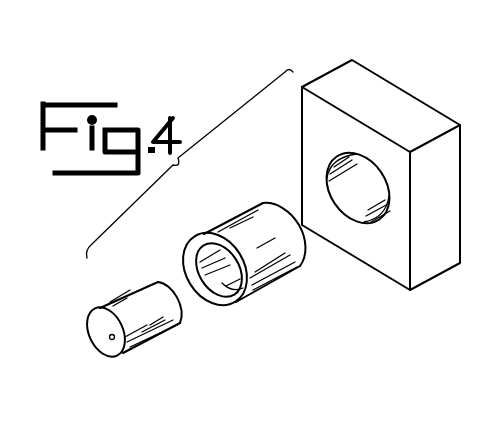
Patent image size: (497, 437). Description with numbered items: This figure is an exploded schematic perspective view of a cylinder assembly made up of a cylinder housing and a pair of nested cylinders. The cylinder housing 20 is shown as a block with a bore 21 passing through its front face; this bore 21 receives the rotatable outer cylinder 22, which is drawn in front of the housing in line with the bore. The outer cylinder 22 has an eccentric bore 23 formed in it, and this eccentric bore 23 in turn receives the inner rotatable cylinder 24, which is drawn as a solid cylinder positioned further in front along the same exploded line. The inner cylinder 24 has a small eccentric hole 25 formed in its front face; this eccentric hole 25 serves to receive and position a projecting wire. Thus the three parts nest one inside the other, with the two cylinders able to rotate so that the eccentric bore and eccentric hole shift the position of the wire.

The cylinder housing 20 is at (412, 117).
The bore 21 is at (365, 224).
The outer cylinder 22 is at (228, 214).
The eccentric bore 23 is at (228, 296).
The inner cylinder 24 is at (137, 295).
The eccentric hole 25 is at (112, 340).